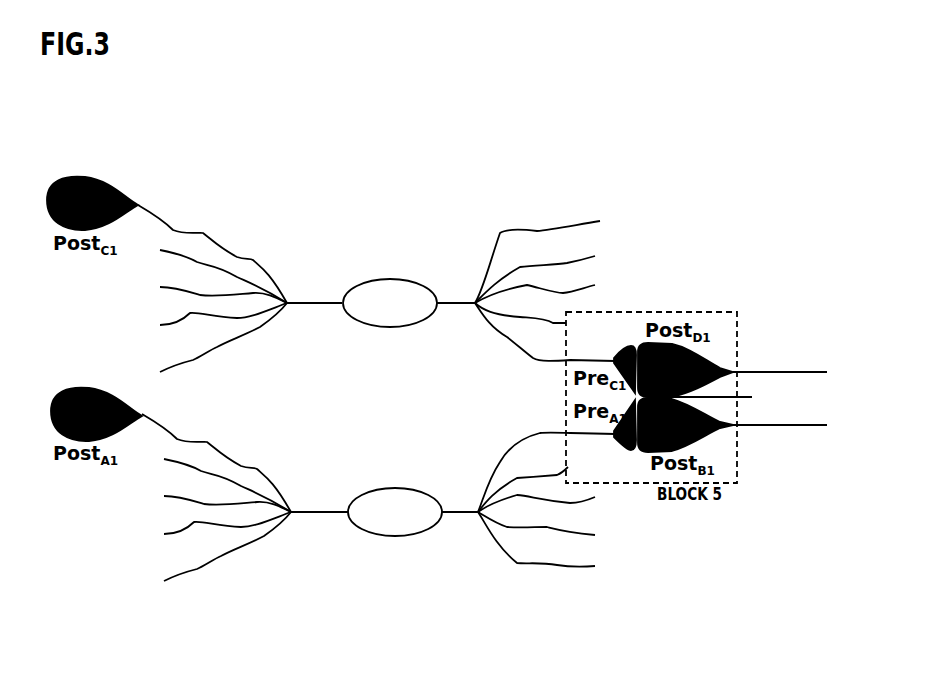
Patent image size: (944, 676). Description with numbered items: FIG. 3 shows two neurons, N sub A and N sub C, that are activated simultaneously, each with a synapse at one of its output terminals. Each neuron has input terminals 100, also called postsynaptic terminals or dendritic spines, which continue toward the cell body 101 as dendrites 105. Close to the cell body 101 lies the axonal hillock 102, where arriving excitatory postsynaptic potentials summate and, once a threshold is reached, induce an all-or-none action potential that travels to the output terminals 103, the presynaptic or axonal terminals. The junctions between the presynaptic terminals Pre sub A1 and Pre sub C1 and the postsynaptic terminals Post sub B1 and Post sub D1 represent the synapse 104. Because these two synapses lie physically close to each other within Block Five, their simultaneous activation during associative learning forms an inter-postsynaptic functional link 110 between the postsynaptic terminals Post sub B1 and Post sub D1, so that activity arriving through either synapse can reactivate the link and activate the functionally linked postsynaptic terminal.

The input terminal 100 is at (100, 185).
The cell body 101 is at (395, 279).
The axonal hillock 102 is at (440, 300).
The output terminal 103 is at (630, 346).
The synapse 104 is at (642, 343).
The dendrite 105 is at (220, 247).
The inter-postsynaptic functional link 110 is at (752, 397).